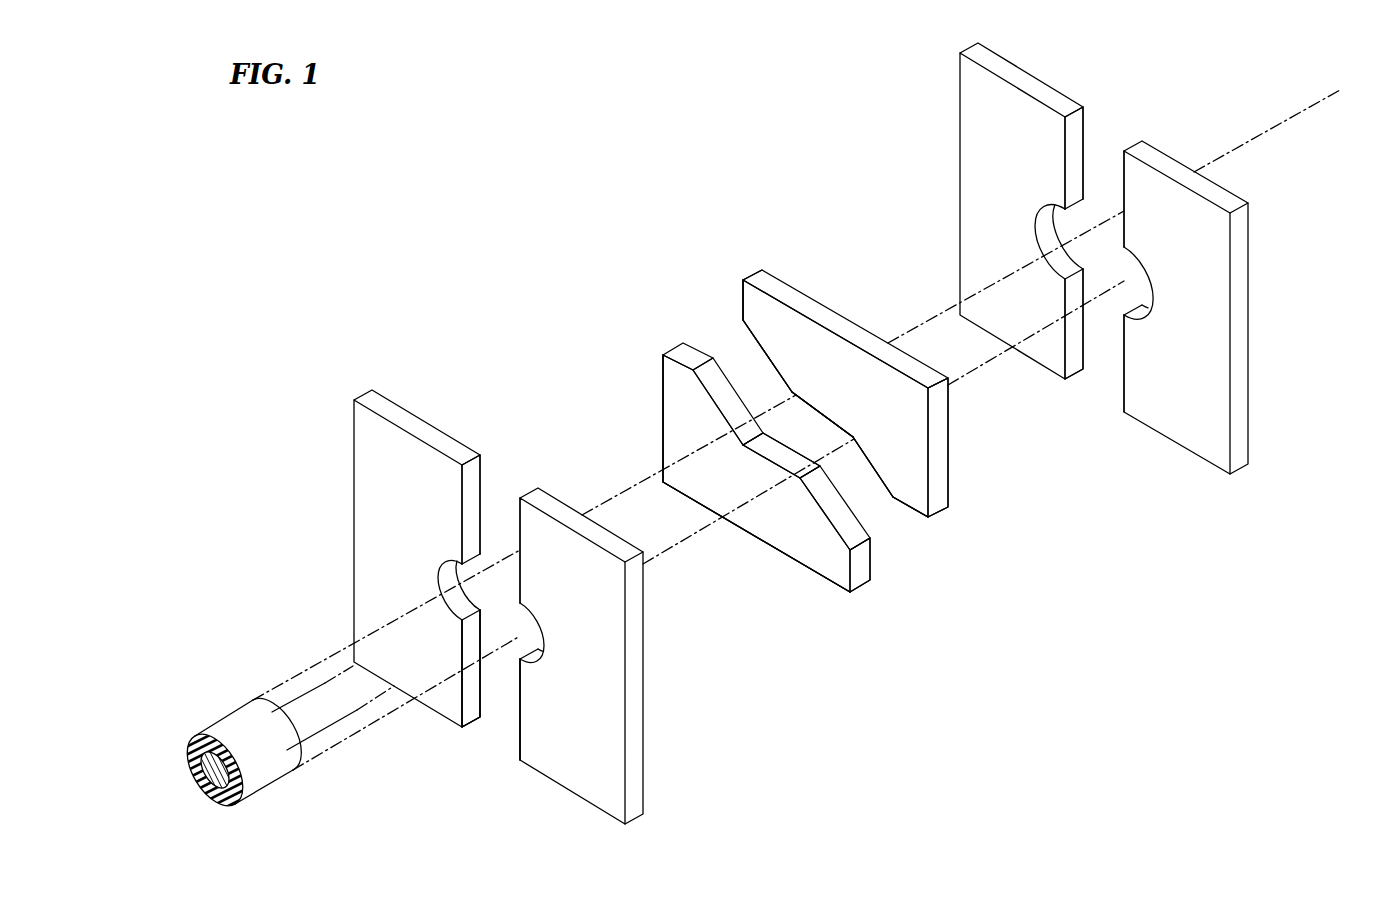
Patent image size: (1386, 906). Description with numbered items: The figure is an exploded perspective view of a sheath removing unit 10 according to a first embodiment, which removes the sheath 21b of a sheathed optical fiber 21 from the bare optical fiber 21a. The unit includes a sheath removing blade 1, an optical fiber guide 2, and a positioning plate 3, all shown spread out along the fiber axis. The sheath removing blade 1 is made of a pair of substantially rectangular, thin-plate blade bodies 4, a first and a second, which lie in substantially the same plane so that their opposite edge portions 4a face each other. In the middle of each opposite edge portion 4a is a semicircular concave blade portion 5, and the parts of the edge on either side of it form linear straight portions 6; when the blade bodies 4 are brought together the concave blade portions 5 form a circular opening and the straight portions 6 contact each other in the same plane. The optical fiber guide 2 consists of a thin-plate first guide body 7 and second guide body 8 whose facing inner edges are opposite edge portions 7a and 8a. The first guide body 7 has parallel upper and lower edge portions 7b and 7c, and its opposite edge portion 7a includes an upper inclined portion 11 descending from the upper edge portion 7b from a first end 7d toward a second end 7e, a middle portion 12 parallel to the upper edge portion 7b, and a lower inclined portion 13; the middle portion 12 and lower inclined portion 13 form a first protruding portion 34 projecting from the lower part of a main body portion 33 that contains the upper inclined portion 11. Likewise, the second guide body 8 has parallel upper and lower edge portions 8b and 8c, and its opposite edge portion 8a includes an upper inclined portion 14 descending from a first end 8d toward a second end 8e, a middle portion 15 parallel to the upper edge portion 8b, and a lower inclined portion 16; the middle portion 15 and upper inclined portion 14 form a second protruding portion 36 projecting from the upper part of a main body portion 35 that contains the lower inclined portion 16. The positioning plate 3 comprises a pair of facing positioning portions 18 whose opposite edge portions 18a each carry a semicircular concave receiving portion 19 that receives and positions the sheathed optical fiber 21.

The sheath removing blade 1 is at (495, 607).
The optical fiber guide 2 is at (819, 386).
The positioning plate 3 is at (1170, 248).
The blade body 4 is at (495, 607).
The opposite edge portion 4a is at (472, 716).
The concave blade portion 5 is at (460, 603).
The straight portion 6 is at (477, 475).
The first guide body 7 is at (749, 463).
The opposite edge portion 7a is at (788, 454).
The upper edge portion 7b is at (678, 350).
The lower edge portion 7c is at (795, 562).
The first end 7d is at (662, 362).
The second end 7e is at (862, 584).
The second guide body 8 is at (852, 388).
The opposite edge portion 8a is at (845, 435).
The upper edge portion 8b is at (800, 302).
The lower edge portion 8c is at (922, 518).
The first end 8d is at (752, 276).
The second end 8e is at (948, 418).
The sheath removing unit 10 is at (800, 386).
The upper inclined portion 11 is at (726, 388).
The middle portion 12 is at (790, 467).
The lower inclined portion 13 is at (826, 500).
The upper inclined portion 14 is at (763, 350).
The middle portion 15 is at (816, 412).
The lower inclined portion 16 is at (886, 494).
The positioning portion 18 is at (1170, 244).
The opposite edge portion 18a is at (1078, 142).
The concave receiving portion 19 is at (1053, 258).
The sheathed optical fiber 21 is at (721, 431).
The bare optical fiber 21a is at (297, 700).
The sheath 21b is at (332, 751).
The main body portion 33 is at (676, 433).
The first protruding portion 34 is at (862, 565).
The main body portion 35 is at (948, 458).
The second protruding portion 36 is at (755, 302).